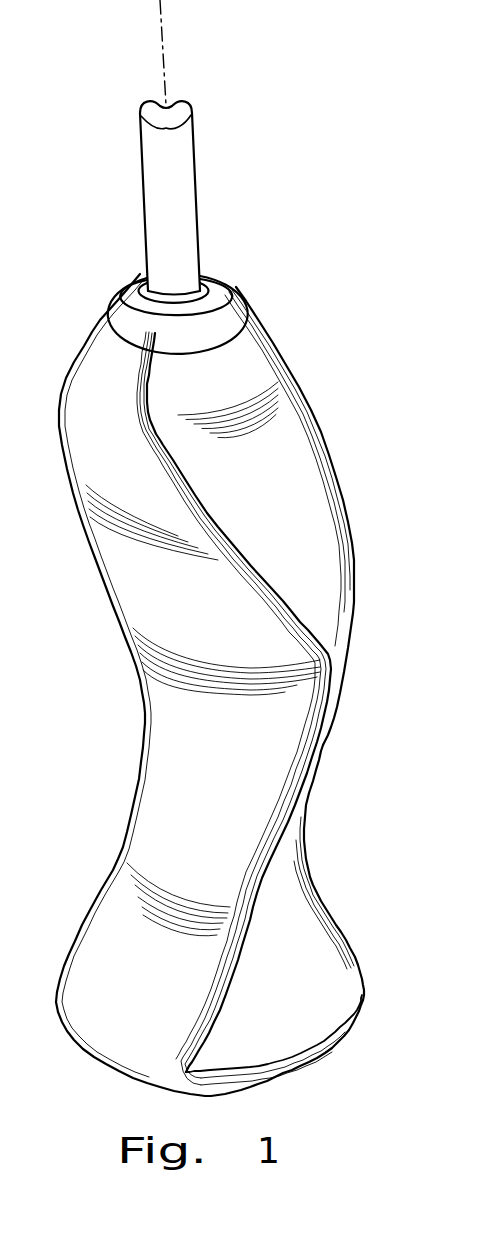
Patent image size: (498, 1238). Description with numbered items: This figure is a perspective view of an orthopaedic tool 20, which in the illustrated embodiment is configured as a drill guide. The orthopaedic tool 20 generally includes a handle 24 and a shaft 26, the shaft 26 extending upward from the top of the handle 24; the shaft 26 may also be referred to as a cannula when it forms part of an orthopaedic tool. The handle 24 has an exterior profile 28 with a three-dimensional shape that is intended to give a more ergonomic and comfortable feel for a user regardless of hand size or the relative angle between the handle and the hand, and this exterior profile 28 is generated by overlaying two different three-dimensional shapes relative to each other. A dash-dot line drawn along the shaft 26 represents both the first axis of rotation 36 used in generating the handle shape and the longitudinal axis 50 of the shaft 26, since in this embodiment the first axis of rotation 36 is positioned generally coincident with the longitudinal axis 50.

The orthopaedic tool 20 is at (242, 548).
The handle 24 is at (365, 466).
The shaft 26 is at (210, 182).
The exterior profile 28 is at (317, 392).
The first axis of rotation 36 is at (222, 52).
The longitudinal axis 50 is at (163, 49).